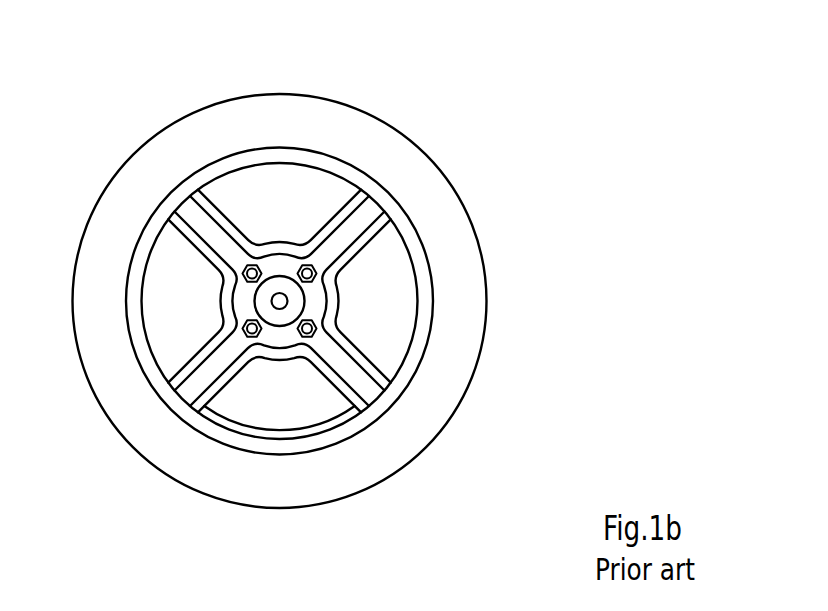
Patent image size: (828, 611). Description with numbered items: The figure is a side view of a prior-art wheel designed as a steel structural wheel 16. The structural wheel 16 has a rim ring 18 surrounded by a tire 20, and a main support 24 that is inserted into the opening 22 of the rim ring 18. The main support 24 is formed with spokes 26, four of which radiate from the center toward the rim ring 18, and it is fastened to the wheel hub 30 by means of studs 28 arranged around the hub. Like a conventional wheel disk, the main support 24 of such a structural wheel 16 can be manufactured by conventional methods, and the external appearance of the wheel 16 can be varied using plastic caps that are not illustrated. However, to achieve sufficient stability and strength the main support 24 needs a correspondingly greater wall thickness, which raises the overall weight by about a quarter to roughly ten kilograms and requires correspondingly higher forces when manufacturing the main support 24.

The steel structural wheel 16 is at (312, 302).
The rim ring 18 is at (407, 233).
The tire 20 is at (340, 120).
The opening 22 is at (428, 272).
The main support 24 is at (310, 302).
The spokes 26 is at (355, 380).
The studs 28 is at (308, 337).
The wheel hub 30 is at (276, 315).